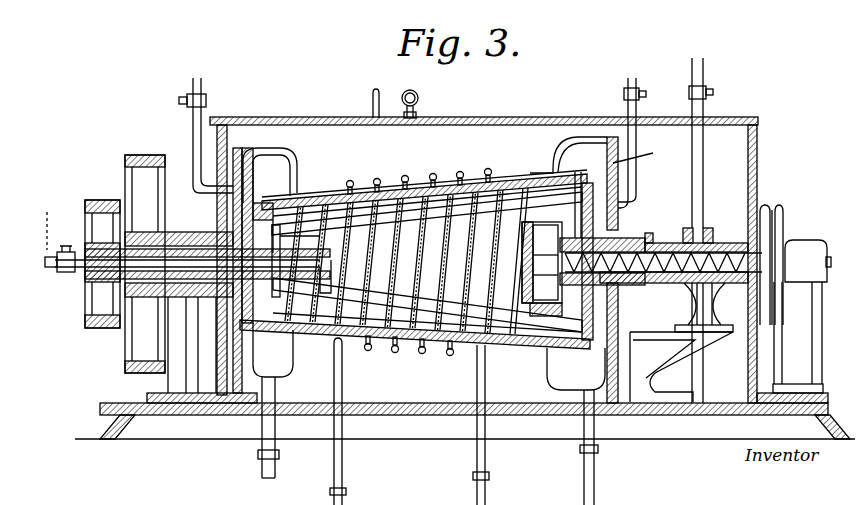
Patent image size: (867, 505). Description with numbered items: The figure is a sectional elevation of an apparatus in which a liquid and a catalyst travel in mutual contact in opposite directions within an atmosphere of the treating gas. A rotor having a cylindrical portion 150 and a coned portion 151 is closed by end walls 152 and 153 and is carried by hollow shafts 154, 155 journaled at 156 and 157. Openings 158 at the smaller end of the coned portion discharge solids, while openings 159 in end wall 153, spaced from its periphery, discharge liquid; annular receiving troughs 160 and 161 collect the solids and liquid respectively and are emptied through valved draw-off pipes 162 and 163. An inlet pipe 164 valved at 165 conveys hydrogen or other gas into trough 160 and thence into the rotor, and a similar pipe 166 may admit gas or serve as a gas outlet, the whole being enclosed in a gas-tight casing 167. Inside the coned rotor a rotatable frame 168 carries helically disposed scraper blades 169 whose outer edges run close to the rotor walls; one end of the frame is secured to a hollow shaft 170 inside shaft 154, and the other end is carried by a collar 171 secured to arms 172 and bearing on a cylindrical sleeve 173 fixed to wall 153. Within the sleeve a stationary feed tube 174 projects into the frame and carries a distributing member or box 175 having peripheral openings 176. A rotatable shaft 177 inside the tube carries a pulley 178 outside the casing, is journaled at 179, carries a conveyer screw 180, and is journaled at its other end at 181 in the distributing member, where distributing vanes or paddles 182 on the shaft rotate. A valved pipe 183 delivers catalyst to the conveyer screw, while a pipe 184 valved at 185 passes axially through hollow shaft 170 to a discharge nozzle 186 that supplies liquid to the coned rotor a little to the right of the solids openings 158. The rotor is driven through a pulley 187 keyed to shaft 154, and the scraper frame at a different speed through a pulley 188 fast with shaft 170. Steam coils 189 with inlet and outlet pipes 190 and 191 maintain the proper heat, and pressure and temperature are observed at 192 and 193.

The cylindrical portion 150 is at (510, 179).
The coned portion 151 is at (330, 202).
The end wall 152 is at (233, 220).
The end wall 153 is at (618, 224).
The hollow shaft 154 is at (150, 300).
The hollow shaft 155 is at (645, 284).
The journal 156 is at (175, 232).
The journal 157 is at (645, 235).
The openings for discharge of solids 158 is at (291, 190).
The openings for discharging liquid 159 is at (618, 197).
The annular receiving trough 160 is at (268, 152).
The annular receiving trough 161 is at (581, 137).
The valved draw-off pipe 162 is at (262, 432).
The valved draw-off pipe 163 is at (594, 449).
The inlet pipe 164 is at (193, 133).
The valve 165 is at (204, 102).
The pipe 166 is at (639, 105).
The casing 167 is at (477, 117).
The rotatable frame 168 is at (425, 182).
The helically disposed scraper blades 169 is at (472, 178).
The hollow shaft 170 is at (85, 240).
The collar 171 is at (546, 284).
The arms 172 is at (580, 197).
The cylindrical sleeve 173 is at (546, 264).
The stationary feed tube 174 is at (630, 285).
The distributing member or box 175 is at (522, 254).
The peripheral openings 176 is at (508, 228).
The rotatable shaft 177 is at (691, 342).
The pulley 178 is at (783, 217).
The journal 179 is at (794, 321).
The conveyer screw 180 is at (727, 238).
The journal 181 is at (522, 268).
The distributing vanes or paddles 182 is at (542, 269).
The valved pipe 183 is at (704, 108).
The pipe 184 is at (83, 275).
The valve 185 is at (60, 251).
The discharge nozzle 186 is at (330, 269).
The pulley 187 is at (140, 155).
The pulley 188 is at (100, 200).
The steam coils 189 is at (420, 352).
The inlet pipe 190 is at (342, 460).
The outlet pipe 191 is at (477, 460).
The pressure indicator 192 is at (416, 92).
The temperature indicator 193 is at (374, 90).